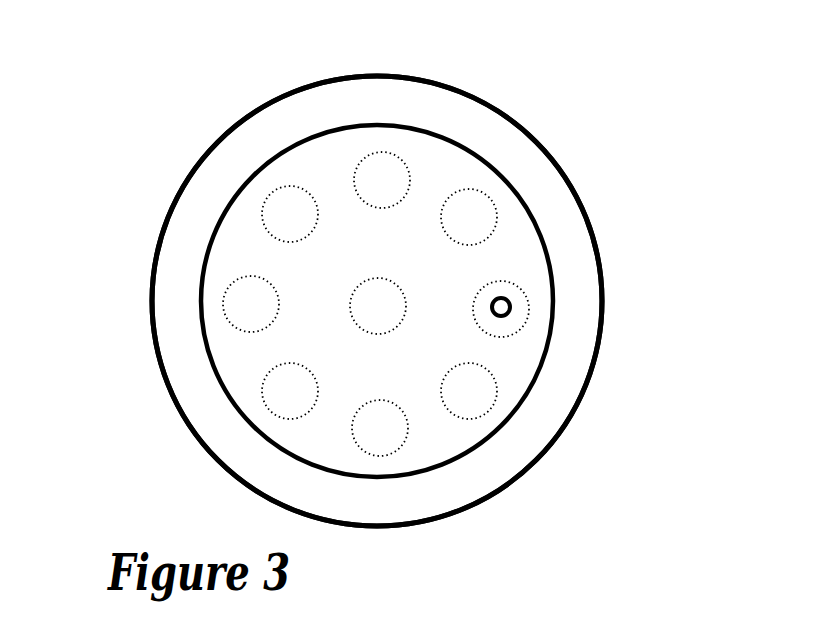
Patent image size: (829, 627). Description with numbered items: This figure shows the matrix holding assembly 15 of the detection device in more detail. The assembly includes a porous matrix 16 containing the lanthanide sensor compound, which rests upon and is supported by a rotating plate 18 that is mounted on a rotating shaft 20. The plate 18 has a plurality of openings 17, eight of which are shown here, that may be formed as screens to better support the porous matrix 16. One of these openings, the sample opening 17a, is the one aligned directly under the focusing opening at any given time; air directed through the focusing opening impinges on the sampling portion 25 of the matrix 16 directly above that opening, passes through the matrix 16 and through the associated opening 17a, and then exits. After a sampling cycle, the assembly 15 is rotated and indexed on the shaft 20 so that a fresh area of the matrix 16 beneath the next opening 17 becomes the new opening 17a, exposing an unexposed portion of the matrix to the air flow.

The matrix holding assembly 15 is at (588, 136).
The porous matrix 16 is at (207, 247).
The openings 17 is at (400, 443).
The sample opening 17a is at (525, 320).
The rotating plate 18 is at (597, 238).
The rotating shaft 20 is at (350, 307).
The sampling portion 25 is at (510, 305).